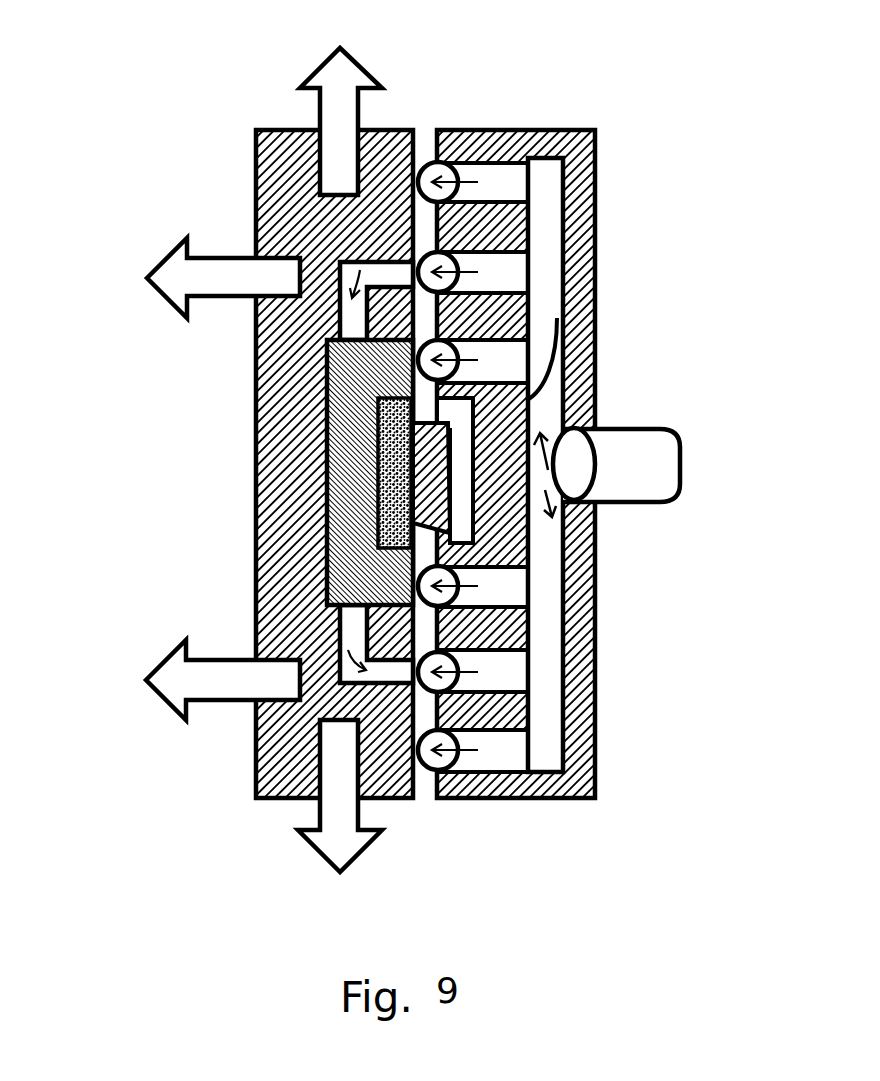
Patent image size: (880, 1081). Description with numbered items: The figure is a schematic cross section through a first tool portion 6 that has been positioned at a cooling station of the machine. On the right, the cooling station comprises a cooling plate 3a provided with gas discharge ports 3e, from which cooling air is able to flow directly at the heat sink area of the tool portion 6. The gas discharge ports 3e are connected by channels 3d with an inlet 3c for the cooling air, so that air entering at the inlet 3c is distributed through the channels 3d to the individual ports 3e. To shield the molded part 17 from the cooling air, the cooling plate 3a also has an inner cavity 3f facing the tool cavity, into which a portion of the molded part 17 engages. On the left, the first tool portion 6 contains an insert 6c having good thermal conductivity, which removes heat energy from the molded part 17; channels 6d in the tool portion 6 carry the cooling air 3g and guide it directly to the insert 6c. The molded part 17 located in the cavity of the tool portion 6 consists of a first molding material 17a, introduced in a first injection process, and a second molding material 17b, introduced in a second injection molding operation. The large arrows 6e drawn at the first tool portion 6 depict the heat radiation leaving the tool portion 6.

The first tool portion 6 is at (258, 200).
The insert 6c is at (350, 410).
The channels 6d is at (383, 282).
The arrows 6e is at (322, 75).
The cooling plate 3a is at (595, 215).
The inlet 3c is at (655, 465).
The channels 3d is at (547, 676).
The gas discharge ports 3e is at (470, 178).
The inner cavity 3f is at (560, 322).
The cooling air 3g is at (568, 472).
The molded part 17 is at (462, 447).
The first molding material 17a is at (407, 428).
The second molding material 17b is at (320, 540).